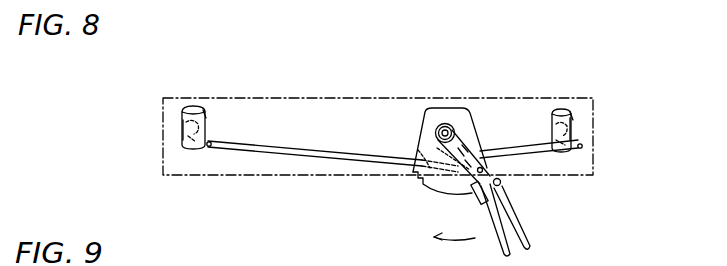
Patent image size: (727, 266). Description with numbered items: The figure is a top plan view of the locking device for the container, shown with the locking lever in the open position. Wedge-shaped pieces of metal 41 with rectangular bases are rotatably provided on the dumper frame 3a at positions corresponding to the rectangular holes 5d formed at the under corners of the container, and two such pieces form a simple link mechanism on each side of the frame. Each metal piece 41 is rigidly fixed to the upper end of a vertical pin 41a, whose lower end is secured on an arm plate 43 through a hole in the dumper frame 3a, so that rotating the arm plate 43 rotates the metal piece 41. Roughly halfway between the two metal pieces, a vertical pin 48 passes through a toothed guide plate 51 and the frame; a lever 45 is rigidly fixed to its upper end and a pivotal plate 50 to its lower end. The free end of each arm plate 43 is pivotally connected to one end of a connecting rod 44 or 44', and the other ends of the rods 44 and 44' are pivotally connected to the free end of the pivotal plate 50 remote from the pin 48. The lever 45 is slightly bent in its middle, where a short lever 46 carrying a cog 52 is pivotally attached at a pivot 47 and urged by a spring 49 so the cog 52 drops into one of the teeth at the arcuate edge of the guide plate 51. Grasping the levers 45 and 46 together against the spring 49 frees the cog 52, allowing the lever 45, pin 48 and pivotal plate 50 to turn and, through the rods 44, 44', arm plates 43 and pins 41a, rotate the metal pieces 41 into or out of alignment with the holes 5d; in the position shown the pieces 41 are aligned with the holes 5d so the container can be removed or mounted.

The dumper frame 3a is at (284, 106).
The wedge shaped piece of metal 41 is at (195, 112).
The vertical pin 41a is at (184, 127).
The rectangular hole 5d is at (206, 116).
The arm plate 43 is at (211, 140).
The connecting rod 44 is at (333, 146).
The connecting rod 44' is at (529, 128).
The lever 45 is at (529, 220).
The short lever 46 is at (503, 231).
The pivot pin 47 is at (501, 184).
The vertical pin 48 is at (449, 129).
The spring 49 is at (484, 169).
The pivotal plate 50 is at (432, 150).
The toothed guide plate 51 is at (412, 180).
The cog 52 is at (477, 197).